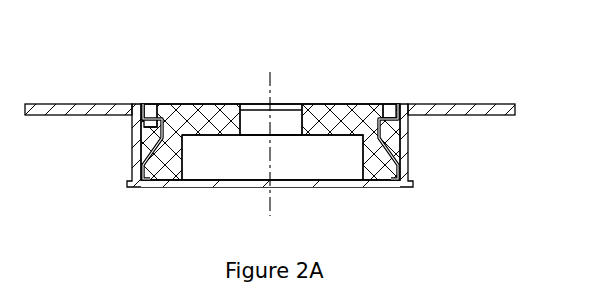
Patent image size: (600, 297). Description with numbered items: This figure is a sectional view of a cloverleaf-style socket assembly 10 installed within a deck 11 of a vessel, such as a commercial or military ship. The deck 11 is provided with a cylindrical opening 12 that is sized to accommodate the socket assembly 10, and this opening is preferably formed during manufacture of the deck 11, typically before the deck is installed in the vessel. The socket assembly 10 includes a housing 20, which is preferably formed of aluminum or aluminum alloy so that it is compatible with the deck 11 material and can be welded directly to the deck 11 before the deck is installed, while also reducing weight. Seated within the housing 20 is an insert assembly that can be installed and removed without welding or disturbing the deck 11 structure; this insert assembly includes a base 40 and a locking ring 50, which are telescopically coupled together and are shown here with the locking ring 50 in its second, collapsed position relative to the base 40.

The cloverleaf-style socket assembly 10 is at (191, 84).
The deck 11 is at (461, 104).
The cylindrical opening 12 is at (130, 108).
The housing 20 is at (410, 165).
The base 40 is at (323, 102).
The locking ring 50 is at (392, 103).